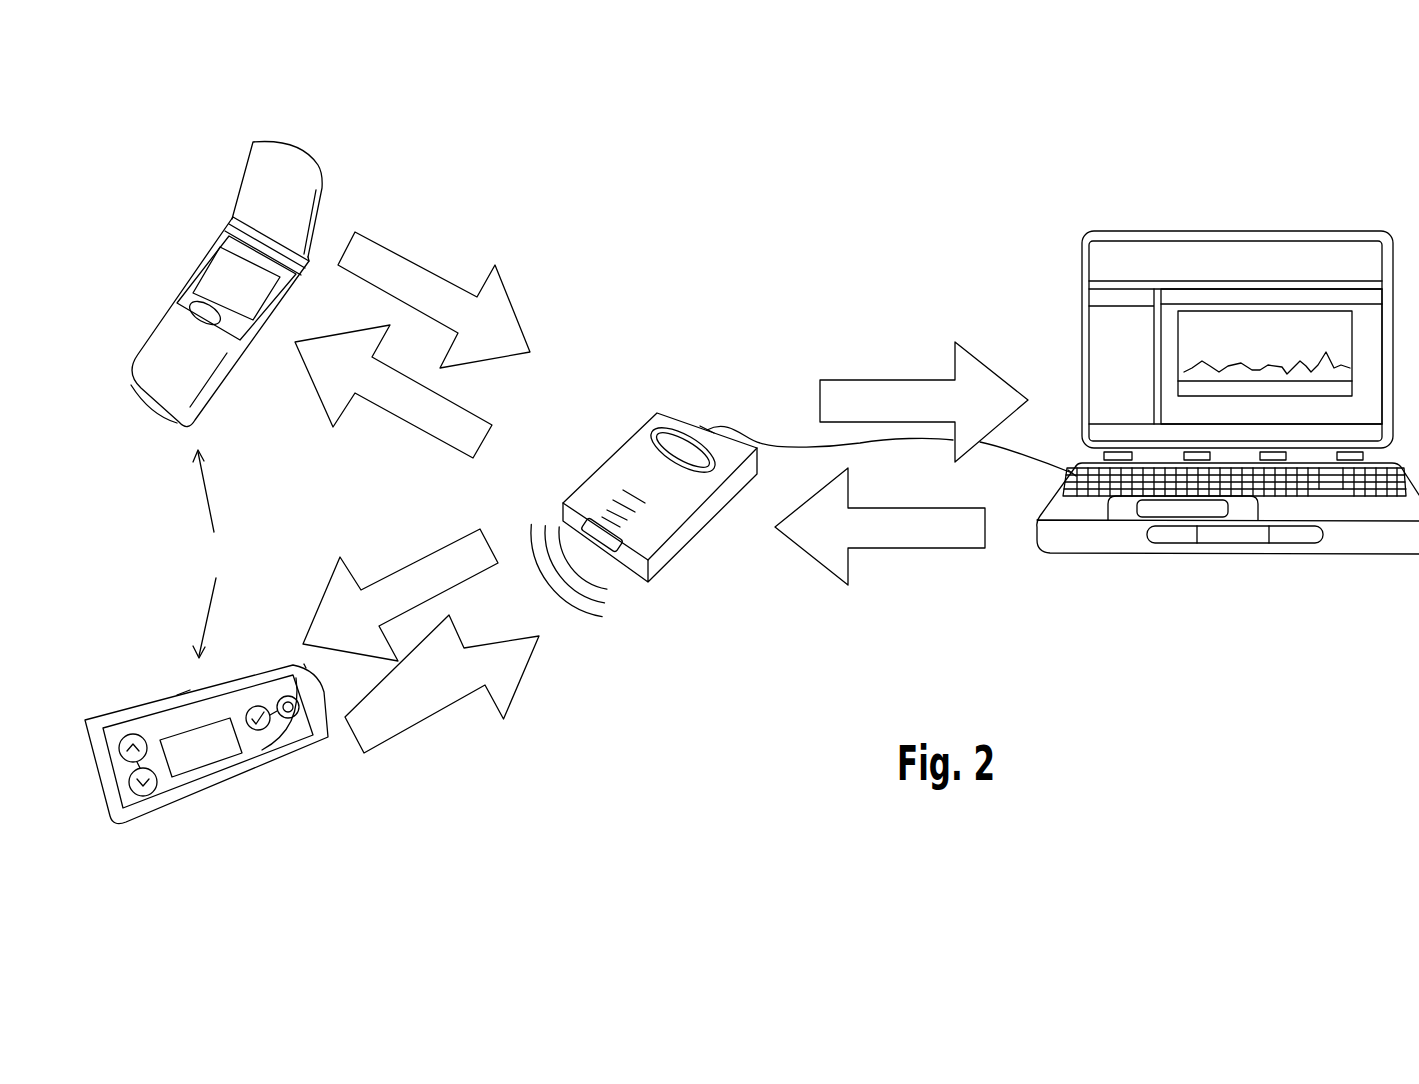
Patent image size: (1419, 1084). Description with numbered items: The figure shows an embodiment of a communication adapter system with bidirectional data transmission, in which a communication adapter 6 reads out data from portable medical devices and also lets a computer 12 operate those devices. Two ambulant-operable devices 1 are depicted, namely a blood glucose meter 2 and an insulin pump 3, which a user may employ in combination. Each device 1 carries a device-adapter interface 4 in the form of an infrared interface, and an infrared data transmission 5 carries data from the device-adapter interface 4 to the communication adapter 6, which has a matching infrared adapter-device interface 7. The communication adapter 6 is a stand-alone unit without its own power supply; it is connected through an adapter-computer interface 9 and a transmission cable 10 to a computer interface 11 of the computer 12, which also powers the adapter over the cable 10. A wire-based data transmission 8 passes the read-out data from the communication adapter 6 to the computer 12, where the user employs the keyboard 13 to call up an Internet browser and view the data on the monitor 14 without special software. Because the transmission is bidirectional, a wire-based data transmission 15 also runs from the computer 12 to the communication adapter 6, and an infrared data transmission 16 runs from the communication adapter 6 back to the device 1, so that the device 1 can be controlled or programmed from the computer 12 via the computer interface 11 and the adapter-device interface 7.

The device 1 is at (207, 554).
The blood glucose meter 2 is at (222, 278).
The insulin pump 3 is at (197, 755).
The device-adapter interface 4 is at (308, 263).
The infrared data transmission 5 is at (400, 270).
The communication adapter 6 is at (678, 498).
The adapter-device interface 7 is at (638, 567).
The wire-based data transmission 8 is at (857, 390).
The adapter-computer interface 9 is at (707, 428).
The transmission cable 10 is at (780, 440).
The computer interface 11 is at (1073, 470).
The computer 12 is at (1128, 231).
The keyboard 13 is at (1334, 485).
The monitor 14 is at (1256, 313).
The wire-based data transmission 15 is at (938, 533).
The infrared data transmission 16 is at (433, 560).